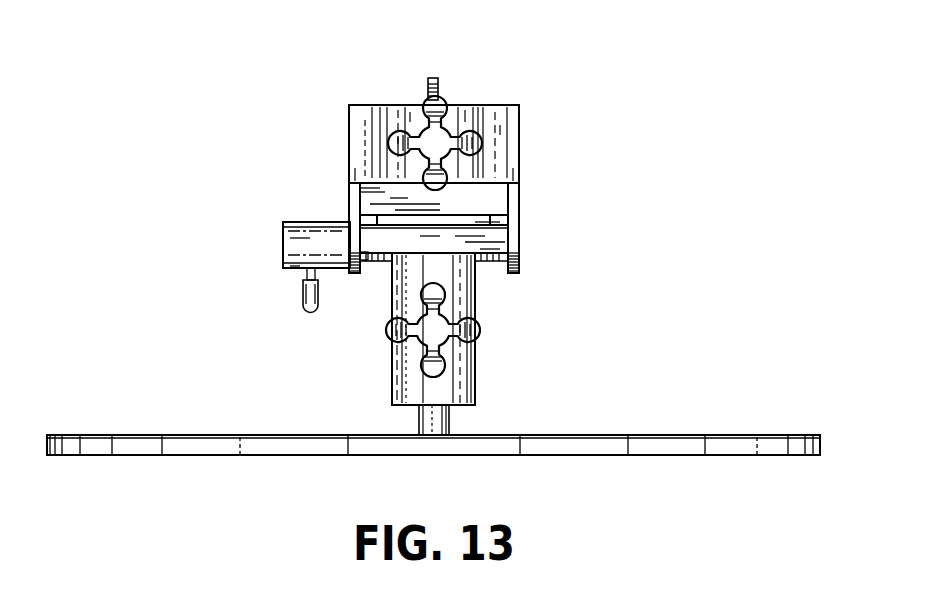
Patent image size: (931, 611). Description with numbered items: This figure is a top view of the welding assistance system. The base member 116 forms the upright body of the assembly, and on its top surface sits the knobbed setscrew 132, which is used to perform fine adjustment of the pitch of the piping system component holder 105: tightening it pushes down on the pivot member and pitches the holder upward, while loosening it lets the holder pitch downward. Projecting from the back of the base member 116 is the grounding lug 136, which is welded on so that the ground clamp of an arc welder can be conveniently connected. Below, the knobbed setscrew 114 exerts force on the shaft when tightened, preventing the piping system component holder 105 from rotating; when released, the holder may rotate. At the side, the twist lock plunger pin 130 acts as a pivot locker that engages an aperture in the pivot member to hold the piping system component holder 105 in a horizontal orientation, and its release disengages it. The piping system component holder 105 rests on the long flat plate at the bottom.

The piping system component holder 105 is at (198, 435).
The knobbed setscrew 114 is at (480, 330).
The base member 116 is at (518, 142).
The twist lock plunger pin 130 is at (307, 232).
The knobbed setscrew 132 is at (468, 137).
The grounding lug 136 is at (433, 78).